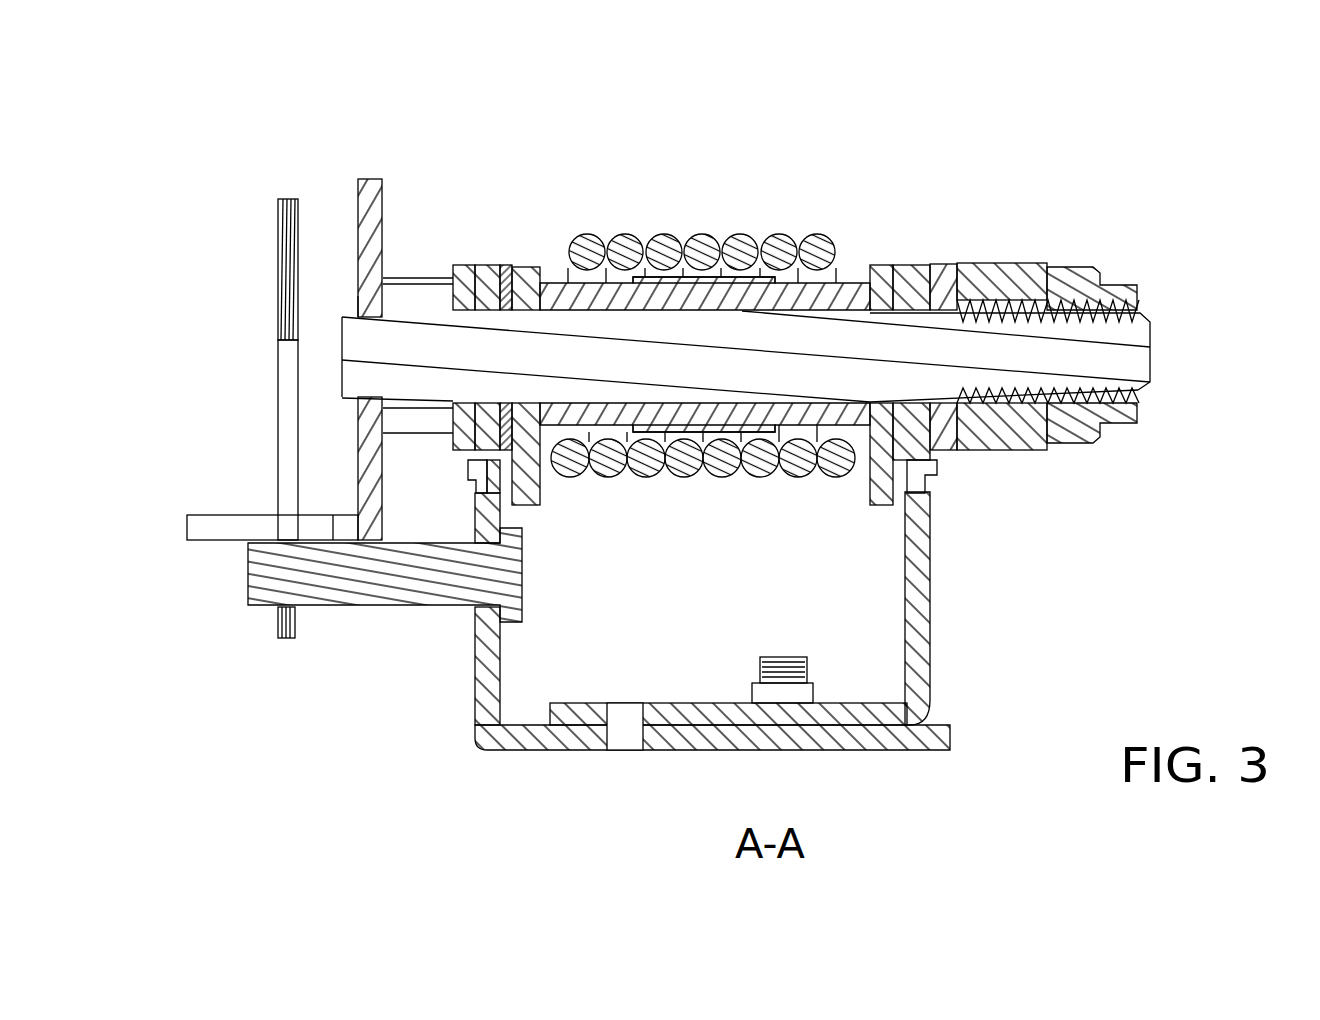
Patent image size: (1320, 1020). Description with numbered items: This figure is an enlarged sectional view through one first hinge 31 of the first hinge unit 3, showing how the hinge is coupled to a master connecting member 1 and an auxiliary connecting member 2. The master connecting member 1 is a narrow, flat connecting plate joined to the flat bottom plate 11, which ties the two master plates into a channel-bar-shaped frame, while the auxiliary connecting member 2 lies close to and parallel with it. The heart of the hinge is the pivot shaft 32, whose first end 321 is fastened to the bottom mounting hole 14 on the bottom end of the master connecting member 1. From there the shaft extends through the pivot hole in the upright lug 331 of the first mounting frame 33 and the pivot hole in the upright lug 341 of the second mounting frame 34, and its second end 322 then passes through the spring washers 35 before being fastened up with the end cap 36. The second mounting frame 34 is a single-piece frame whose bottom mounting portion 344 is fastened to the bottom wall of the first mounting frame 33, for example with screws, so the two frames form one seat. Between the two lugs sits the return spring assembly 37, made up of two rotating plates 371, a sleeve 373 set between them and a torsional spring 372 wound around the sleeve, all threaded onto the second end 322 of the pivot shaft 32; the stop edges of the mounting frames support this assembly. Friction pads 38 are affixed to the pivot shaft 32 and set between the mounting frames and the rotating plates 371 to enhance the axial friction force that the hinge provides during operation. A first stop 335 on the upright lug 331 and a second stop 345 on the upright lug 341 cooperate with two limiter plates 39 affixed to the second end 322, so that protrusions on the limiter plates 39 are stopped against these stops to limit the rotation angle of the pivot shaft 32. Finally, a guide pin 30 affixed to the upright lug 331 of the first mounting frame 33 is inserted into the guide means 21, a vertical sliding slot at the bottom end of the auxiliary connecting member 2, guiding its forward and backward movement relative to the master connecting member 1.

The master connecting member 1 is at (372, 179).
The auxiliary connecting member 2 is at (278, 285).
The first hinge unit 3 is at (818, 137).
The bottom plate 11 is at (220, 530).
The bottom mounting hole 14 is at (357, 303).
The guide means 21 is at (287, 423).
The guide pin 30 is at (377, 593).
The first hinge 31 is at (713, 144).
The pivot shaft 32 is at (558, 320).
The first mounting frame 33 is at (678, 752).
The second mounting frame 34 is at (845, 703).
The spring washer 35 is at (1002, 263).
The end cap 36 is at (1072, 265).
The return spring assembly 37 is at (595, 134).
The friction pad 38 is at (496, 265).
The limiter plate 39 is at (456, 264).
The first end 321 is at (340, 377).
The second end 322 is at (637, 267).
The upright lug 331 is at (498, 655).
The first stop 335 is at (468, 475).
The upright lug 341 is at (913, 548).
The bottom mounting portion 344 is at (697, 705).
The second stop 345 is at (935, 490).
The rotating plate 371 is at (506, 265).
The torsional spring 372 is at (668, 240).
The sleeve 373 is at (733, 290).